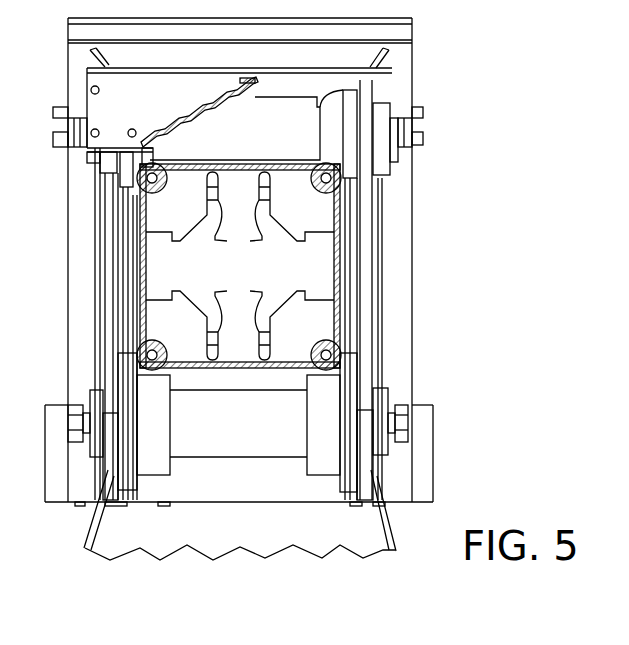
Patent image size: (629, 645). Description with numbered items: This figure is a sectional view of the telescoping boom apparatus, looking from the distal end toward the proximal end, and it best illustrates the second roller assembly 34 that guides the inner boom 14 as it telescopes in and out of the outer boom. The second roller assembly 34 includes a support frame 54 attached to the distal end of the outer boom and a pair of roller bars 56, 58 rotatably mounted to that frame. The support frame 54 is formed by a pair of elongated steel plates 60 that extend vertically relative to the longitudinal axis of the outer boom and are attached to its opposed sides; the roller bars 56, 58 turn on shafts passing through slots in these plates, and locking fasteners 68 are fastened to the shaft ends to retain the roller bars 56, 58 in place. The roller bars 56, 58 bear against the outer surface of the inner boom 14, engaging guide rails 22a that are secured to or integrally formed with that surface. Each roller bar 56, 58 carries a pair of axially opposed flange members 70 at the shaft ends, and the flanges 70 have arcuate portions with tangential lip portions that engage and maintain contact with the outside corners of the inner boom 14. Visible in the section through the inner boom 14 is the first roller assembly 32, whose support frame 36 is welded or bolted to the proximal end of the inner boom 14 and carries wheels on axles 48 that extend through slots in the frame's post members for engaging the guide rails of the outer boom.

The inner boom 14 is at (337, 310).
The second set of guide rails 22a is at (140, 190).
The first roller assembly 32 is at (160, 316).
The second roller assembly 34 is at (284, 96).
The support frame 36 is at (308, 222).
The axles 48 is at (240, 266).
The support frame 54 is at (108, 240).
The roller bar 56 is at (280, 120).
The roller bar 58 is at (242, 445).
The elongated steel plates 60 is at (332, 0).
The locking fasteners 68 is at (75, 138).
The flange members 70 is at (343, 118).